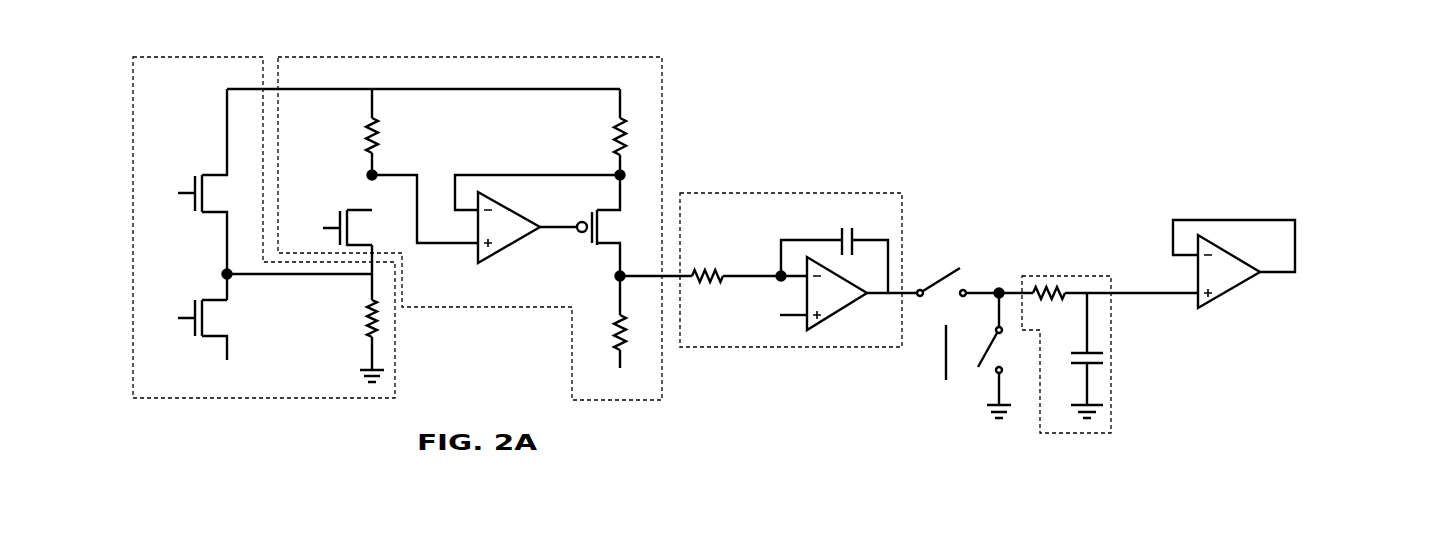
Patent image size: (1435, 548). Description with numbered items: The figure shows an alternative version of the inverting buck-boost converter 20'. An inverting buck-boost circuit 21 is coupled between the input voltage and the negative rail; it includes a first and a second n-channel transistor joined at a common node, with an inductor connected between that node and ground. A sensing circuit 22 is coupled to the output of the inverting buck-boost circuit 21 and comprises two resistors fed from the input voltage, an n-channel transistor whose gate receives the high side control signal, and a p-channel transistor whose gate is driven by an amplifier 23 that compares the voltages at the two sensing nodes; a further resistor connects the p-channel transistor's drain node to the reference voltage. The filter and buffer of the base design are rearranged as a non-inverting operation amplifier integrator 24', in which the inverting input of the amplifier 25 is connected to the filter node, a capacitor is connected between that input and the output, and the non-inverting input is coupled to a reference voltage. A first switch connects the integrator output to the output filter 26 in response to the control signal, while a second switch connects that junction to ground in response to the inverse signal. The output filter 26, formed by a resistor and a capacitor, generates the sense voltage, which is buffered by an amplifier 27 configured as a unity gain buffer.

The inverting buck-boost converter 20' is at (766, 228).
The inverting buck-boost circuit 21 is at (233, 57).
The sensing circuit 22 is at (507, 57).
The amplifier 23 is at (535, 208).
The non-inverting operation amplifier integrator 24' is at (798, 252).
The amplifier 25 is at (836, 313).
The output filter 26 is at (1065, 276).
The amplifier 27 is at (1210, 308).